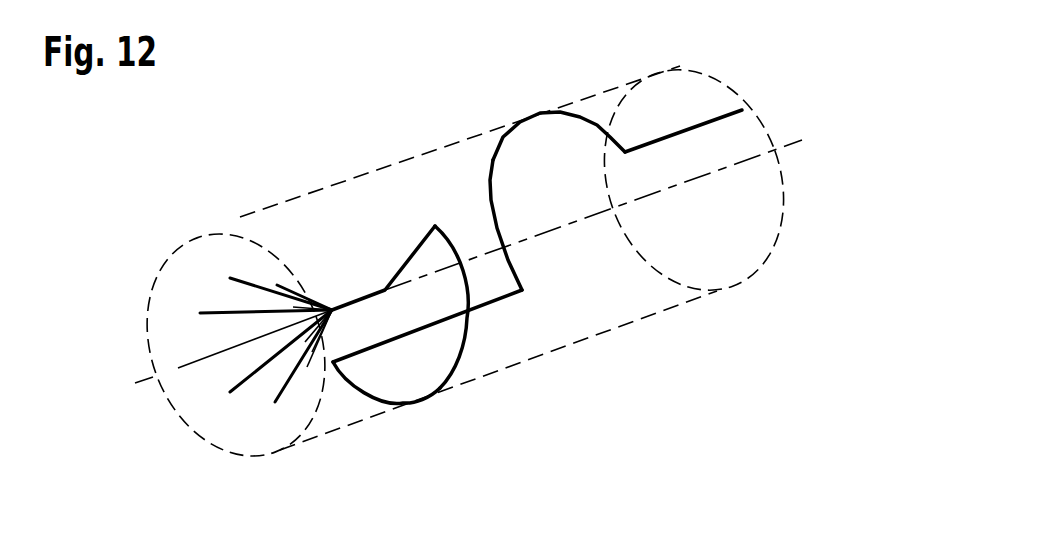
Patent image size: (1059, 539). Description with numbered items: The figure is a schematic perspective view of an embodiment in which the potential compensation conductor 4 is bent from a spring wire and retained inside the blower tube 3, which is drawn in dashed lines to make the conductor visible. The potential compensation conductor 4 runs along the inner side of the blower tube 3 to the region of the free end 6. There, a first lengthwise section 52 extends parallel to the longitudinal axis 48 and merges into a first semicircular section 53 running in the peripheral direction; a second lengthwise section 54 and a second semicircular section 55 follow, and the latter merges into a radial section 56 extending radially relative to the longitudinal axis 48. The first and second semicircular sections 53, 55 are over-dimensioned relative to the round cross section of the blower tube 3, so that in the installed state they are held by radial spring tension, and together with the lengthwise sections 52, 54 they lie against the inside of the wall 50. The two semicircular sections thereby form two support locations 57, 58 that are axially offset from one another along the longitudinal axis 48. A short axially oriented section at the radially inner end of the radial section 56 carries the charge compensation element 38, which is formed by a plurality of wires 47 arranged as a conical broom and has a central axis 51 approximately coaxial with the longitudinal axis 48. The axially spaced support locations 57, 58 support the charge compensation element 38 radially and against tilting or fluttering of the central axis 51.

The blower tube 3 is at (178, 253).
The potential compensation conductor 4 is at (715, 112).
The free end 6 is at (722, 308).
The charge compensation element 38 is at (308, 273).
The wires 47 is at (248, 380).
The longitudinal axis 48 is at (557, 230).
The wall 50 is at (263, 210).
The central axis 51 is at (150, 380).
The first lengthwise section 52 is at (700, 130).
The first semicircular section 53 is at (492, 157).
The second lengthwise section 54 is at (508, 297).
The second semicircular section 55 is at (473, 347).
The radial section 56 is at (421, 244).
The support location 57 is at (525, 107).
The support location 58 is at (430, 410).